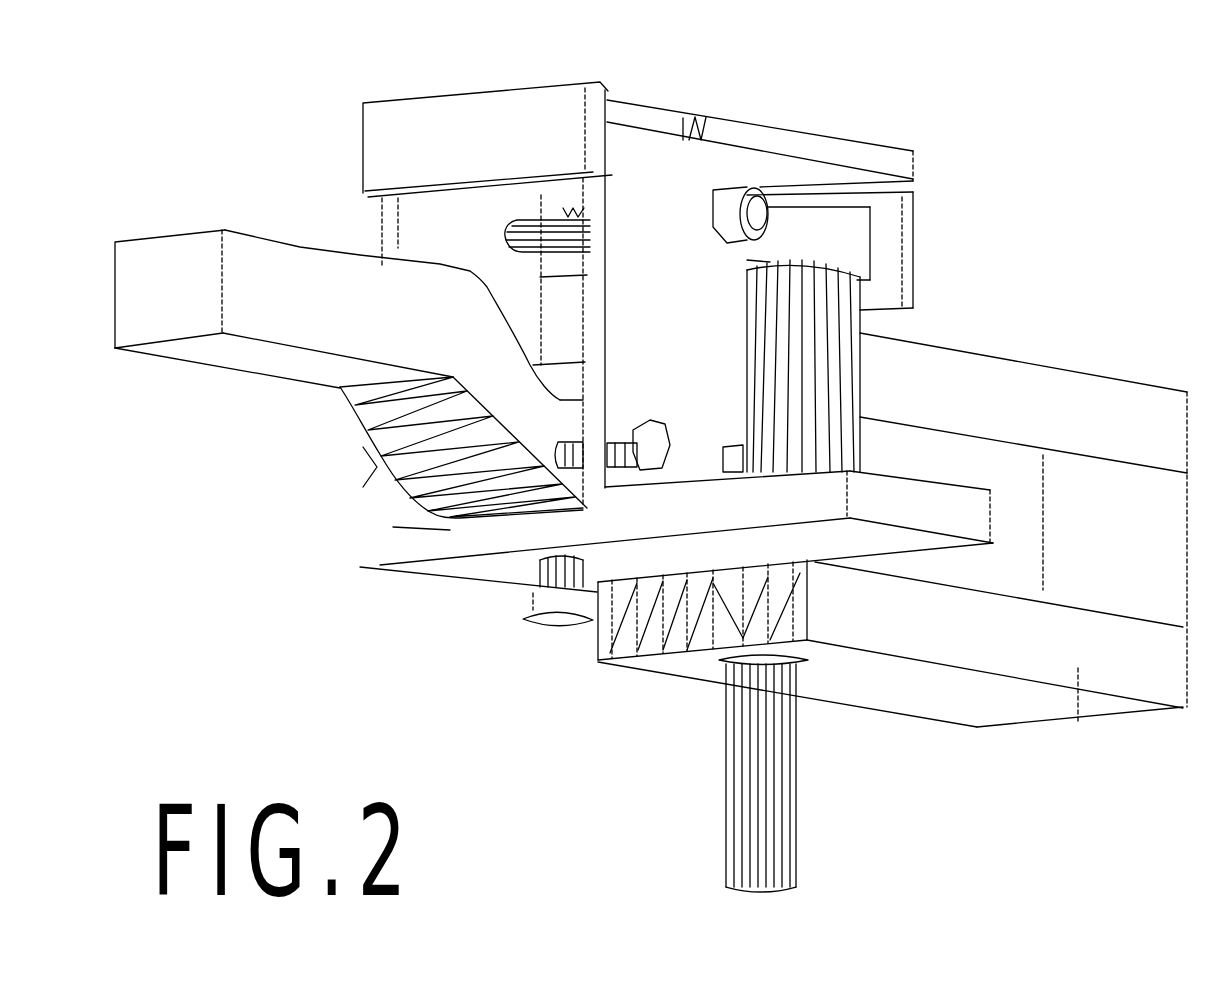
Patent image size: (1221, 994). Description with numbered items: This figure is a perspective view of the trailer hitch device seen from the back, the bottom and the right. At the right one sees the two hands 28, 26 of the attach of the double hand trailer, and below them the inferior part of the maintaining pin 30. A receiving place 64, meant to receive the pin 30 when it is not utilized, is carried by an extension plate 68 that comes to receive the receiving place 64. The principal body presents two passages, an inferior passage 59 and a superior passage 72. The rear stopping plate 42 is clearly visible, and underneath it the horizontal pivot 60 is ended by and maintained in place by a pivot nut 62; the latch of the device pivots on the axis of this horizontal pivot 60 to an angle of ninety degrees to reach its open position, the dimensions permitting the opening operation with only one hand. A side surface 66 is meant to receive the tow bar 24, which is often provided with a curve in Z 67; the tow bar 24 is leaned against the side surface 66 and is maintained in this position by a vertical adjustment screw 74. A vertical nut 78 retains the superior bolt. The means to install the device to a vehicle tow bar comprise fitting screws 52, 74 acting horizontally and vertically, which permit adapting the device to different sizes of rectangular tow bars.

The tow bar 24 is at (293, 320).
The hand of the attach 26 is at (1073, 400).
The hand of the attach 28 is at (1080, 720).
The maintaining pin 30 is at (793, 858).
The rear stopping plate 42 is at (607, 117).
The fitting screw 52 is at (363, 465).
The inferior passage 59 is at (413, 507).
The horizontal pivot 60 is at (540, 252).
The pivot nut 62 is at (735, 190).
The receiving place 64 is at (847, 327).
The side surface 66 is at (560, 402).
The curve in Z 67 is at (481, 507).
The extension plate 68 is at (893, 540).
The superior passage 72 is at (433, 220).
The vertical adjustment screw 74 is at (527, 610).
The vertical nut 78 is at (577, 195).